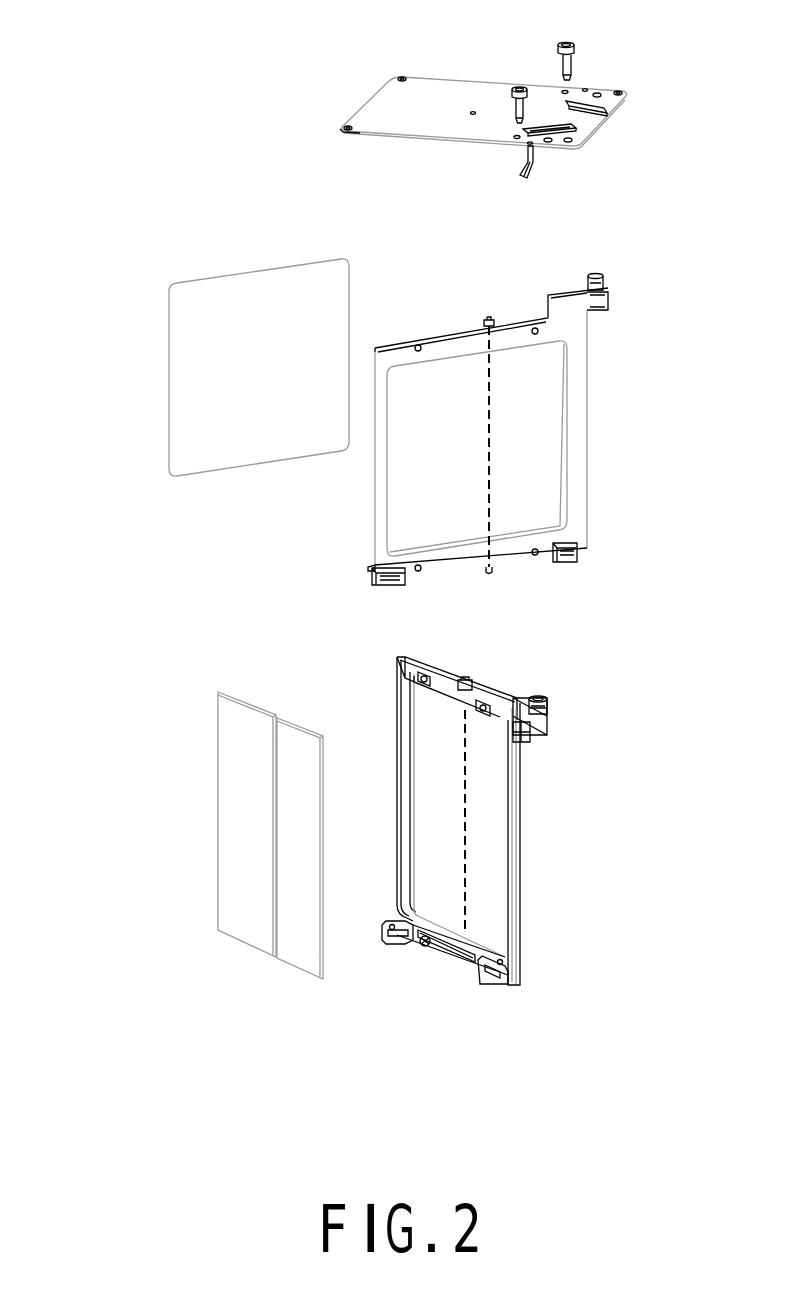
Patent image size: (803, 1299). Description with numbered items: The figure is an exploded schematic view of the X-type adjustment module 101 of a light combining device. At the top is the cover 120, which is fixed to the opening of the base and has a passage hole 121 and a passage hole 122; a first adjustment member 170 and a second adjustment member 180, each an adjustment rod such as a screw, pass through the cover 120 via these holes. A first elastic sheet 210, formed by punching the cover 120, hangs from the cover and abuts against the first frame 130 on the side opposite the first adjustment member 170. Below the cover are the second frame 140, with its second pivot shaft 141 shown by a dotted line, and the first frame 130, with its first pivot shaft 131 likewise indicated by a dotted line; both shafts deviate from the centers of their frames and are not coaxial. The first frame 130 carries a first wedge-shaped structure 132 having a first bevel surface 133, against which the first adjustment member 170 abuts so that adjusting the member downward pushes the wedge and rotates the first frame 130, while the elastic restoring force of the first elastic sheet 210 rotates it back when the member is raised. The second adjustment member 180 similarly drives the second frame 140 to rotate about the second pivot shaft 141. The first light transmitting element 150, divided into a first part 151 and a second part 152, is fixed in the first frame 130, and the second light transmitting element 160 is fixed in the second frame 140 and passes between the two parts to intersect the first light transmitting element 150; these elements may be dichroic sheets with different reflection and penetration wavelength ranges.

The X-type adjustment module 101 is at (165, 52).
The cover 120 is at (441, 85).
The passage hole 121 is at (517, 141).
The passage hole 122 is at (565, 90).
The first frame 130 is at (508, 700).
The first pivot shaft 131 is at (466, 678).
The first wedge-shaped structure 132 is at (531, 740).
The first bevel surface 133 is at (503, 736).
The second frame 140 is at (572, 430).
The second pivot shaft 141 is at (489, 316).
The first light transmitting element 150 is at (189, 835).
The first part 151 is at (235, 813).
The second part 152 is at (295, 878).
The second light transmitting element 160 is at (195, 383).
The first adjustment member 170 is at (511, 108).
The second adjustment member 180 is at (576, 59).
The first elastic sheet 210 is at (535, 163).